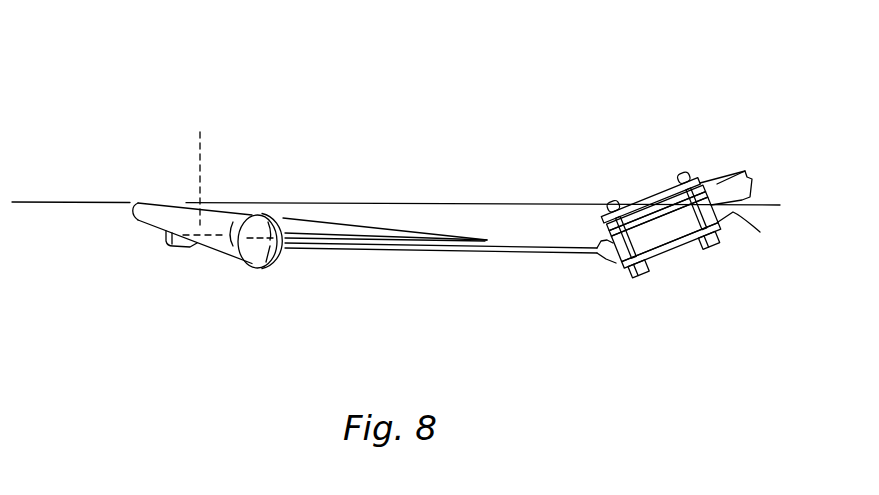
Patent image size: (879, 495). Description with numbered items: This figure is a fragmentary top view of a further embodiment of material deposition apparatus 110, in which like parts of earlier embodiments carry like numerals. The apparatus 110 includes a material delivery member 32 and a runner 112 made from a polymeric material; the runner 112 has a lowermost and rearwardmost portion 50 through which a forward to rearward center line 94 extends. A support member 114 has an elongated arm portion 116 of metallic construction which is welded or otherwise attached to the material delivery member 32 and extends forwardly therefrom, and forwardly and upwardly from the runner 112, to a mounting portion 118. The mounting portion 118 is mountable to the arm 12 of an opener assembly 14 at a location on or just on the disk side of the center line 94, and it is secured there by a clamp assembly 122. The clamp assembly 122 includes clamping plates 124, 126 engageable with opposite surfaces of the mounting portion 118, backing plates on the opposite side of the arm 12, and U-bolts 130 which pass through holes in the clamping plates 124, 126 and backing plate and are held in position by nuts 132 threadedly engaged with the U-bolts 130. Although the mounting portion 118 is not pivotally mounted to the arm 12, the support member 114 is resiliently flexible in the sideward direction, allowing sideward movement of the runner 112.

The arm 12 is at (761, 231).
The opener assembly 14 is at (753, 168).
The material delivery member 32 is at (255, 272).
The lowermost and rearwardmost portion 50 is at (202, 170).
The forward to rearward center line 94 is at (62, 202).
The material deposition apparatus 110 is at (551, 357).
The runner 112 is at (414, 222).
The support member 114 is at (464, 258).
The elongated arm portion 116 is at (515, 242).
The mounting portion 118 is at (652, 197).
The clamp assembly 122 is at (726, 240).
The clamping plate 124 is at (695, 192).
The clamping plate 126 is at (707, 190).
The U-bolt 130 is at (677, 166).
The nut 132 is at (695, 248).